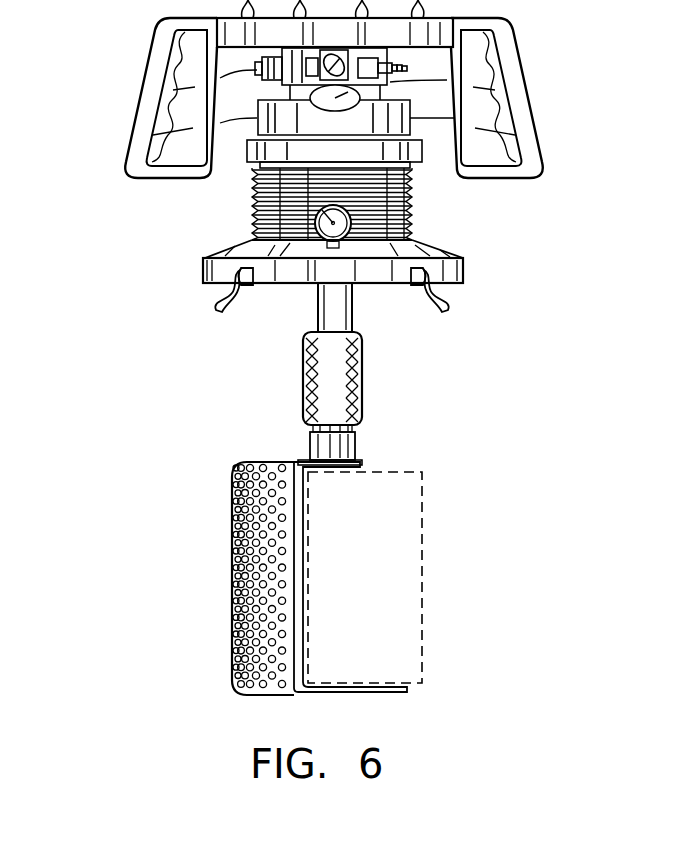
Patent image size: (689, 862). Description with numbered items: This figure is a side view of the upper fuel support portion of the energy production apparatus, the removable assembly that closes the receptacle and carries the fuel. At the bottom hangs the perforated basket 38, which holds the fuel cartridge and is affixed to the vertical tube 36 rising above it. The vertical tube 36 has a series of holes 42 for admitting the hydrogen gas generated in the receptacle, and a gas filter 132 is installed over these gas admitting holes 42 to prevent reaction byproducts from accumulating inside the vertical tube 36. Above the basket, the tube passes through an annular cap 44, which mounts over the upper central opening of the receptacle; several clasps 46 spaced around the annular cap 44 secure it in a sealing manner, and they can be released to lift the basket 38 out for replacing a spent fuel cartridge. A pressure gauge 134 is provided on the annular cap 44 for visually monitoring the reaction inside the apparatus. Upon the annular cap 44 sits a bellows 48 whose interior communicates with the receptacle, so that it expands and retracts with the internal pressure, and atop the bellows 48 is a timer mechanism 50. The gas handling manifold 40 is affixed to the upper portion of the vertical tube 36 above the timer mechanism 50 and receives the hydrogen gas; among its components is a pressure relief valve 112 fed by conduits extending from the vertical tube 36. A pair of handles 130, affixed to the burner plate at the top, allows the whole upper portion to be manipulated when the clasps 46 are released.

The vertical tube 36 is at (316, 313).
The perforated basket 38 is at (232, 557).
The gas handling manifold 40 is at (530, 72).
The holes 42 is at (399, 398).
The annular cap 44 is at (202, 266).
The clasps 46 is at (214, 293).
The bellows 48 is at (410, 190).
The timer mechanism 50 is at (130, 140).
The pressure relief valve 112 is at (135, 98).
The handles 130 is at (532, 117).
The gas filter 132 is at (363, 408).
The pressure gauge 134 is at (405, 212).